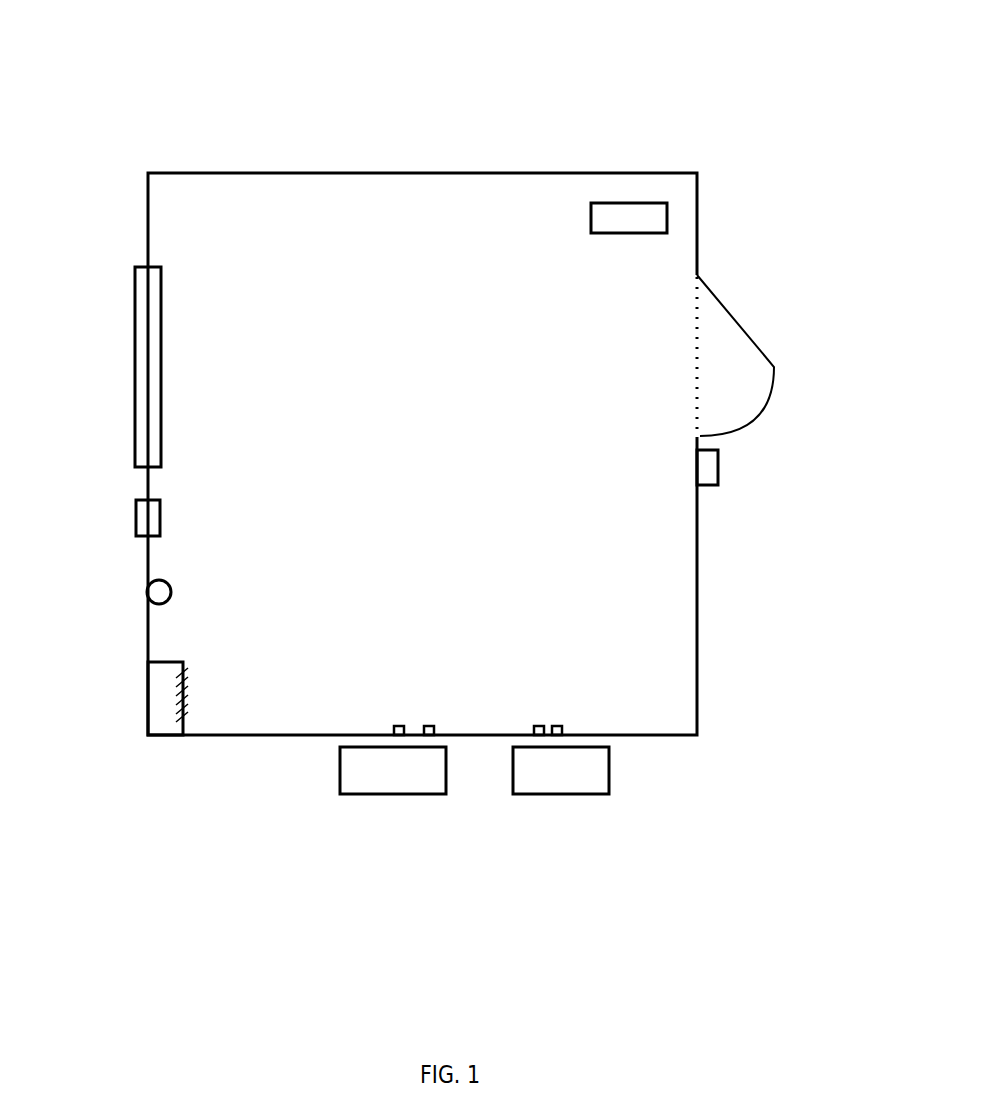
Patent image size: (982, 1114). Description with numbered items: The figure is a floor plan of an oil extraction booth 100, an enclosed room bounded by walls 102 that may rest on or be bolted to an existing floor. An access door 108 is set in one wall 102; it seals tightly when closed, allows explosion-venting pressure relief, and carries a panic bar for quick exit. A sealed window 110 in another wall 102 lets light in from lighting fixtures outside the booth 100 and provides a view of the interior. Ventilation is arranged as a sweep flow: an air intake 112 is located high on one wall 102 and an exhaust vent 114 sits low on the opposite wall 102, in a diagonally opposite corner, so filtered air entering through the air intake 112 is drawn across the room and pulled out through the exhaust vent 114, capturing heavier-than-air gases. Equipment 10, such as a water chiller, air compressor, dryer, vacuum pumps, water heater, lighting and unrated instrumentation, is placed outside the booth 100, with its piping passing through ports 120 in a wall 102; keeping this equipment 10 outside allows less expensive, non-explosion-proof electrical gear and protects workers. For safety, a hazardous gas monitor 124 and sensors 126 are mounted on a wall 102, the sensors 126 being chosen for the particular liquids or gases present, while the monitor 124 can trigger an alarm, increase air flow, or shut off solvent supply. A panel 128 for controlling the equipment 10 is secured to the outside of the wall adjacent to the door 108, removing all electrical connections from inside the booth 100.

The oil extraction booth 100 is at (264, 106).
The walls 102 is at (554, 172).
The access door 108 is at (733, 315).
The sealed window 110 is at (134, 303).
The air intake 112 is at (612, 233).
The exhaust vent 114 is at (185, 690).
The ports 120 is at (569, 720).
The hazardous gas monitor 124 is at (160, 514).
The sensors 126 is at (170, 585).
The panel 128 is at (708, 485).
The equipment 10 is at (435, 794).